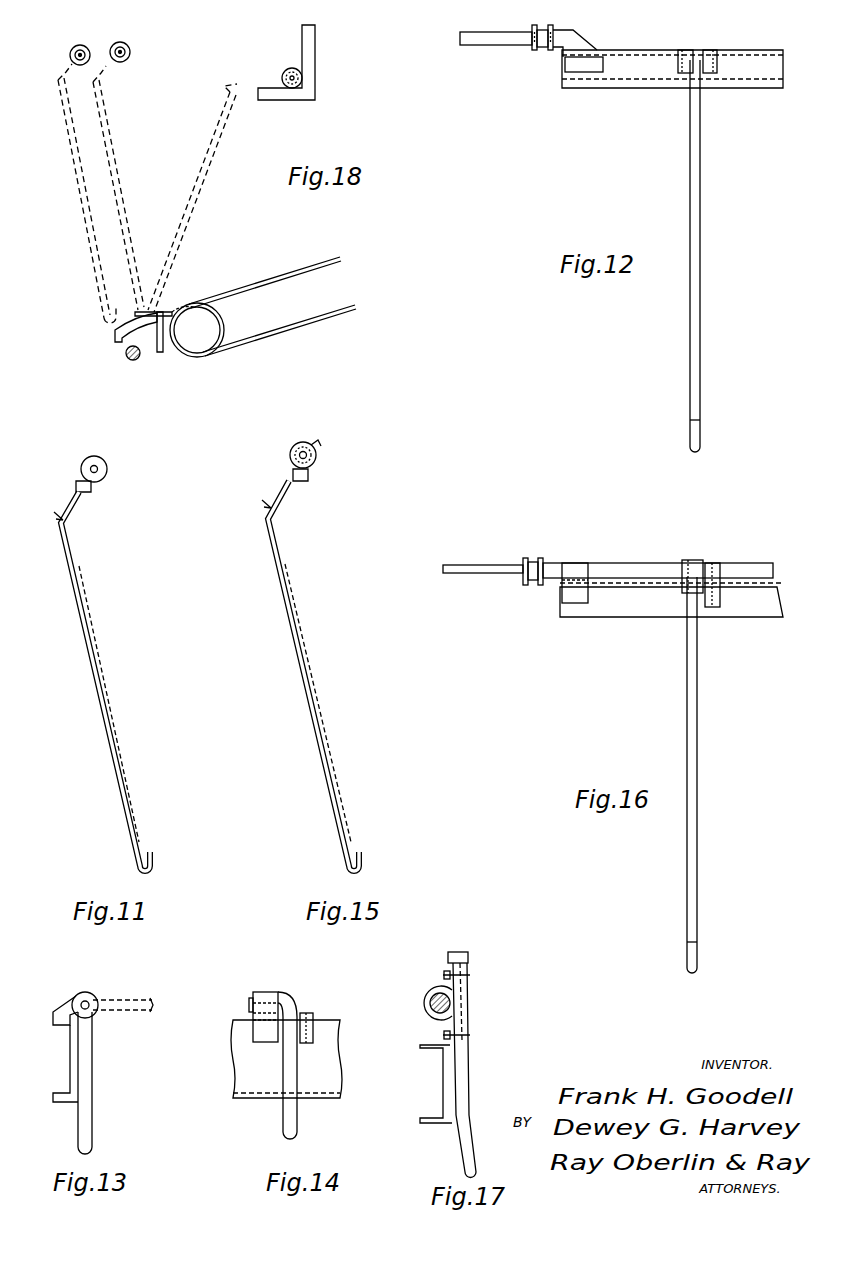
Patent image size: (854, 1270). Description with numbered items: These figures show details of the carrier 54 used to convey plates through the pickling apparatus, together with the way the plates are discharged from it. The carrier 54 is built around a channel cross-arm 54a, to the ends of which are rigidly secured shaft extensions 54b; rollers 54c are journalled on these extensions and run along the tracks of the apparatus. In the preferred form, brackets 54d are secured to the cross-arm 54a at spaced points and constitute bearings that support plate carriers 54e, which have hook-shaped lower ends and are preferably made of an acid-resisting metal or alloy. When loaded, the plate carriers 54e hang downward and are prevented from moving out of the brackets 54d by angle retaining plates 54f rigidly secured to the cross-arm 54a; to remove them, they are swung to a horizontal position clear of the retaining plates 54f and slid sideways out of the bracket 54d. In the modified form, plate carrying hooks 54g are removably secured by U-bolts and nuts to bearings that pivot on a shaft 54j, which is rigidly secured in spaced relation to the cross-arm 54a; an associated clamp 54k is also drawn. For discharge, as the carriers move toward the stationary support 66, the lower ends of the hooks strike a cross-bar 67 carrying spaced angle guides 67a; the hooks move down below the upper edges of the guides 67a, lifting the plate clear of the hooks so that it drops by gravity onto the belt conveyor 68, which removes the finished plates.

In FIG. 11, the carrier 54 is at (102, 496).
In FIG. 15, the carrier 54 is at (310, 486).
In FIG. 12, the channel cross-arm 54a is at (575, 88).
In FIG. 16, the channel cross-arm 54a is at (573, 620).
In FIG. 13, the channel cross-arm 54a is at (70, 1058).
In FIG. 14, the channel cross-arm 54a is at (286, 1059).
In FIG. 17, the channel cross-arm 54a is at (442, 1103).
In FIG. 12, the shaft extension 54b is at (480, 47).
In FIG. 12, the roller 54c is at (541, 50).
In FIG. 12, the bracket 54d is at (682, 48).
In FIG. 13, the bracket 54d is at (68, 1003).
In FIG. 14, the bracket 54d is at (263, 992).
In FIG. 18, the plate carrier 54e is at (113, 157).
In FIG. 12, the plate carrier 54e is at (702, 205).
In FIG. 11, the plate carrier 54e is at (96, 722).
In FIG. 13, the plate carrier 54e is at (90, 1115).
In FIG. 14, the plate carrier 54e is at (297, 1113).
In FIG. 12, the angle retaining plate 54f is at (742, 89).
In FIG. 14, the angle retaining plate 54f is at (313, 1028).
In FIG. 16, the plate carrying hook 54g is at (697, 740).
In FIG. 15, the plate carrying hook 54g is at (299, 679).
In FIG. 17, the plate carrying hook 54g is at (468, 955).
In FIG. 16, the shaft 54j is at (630, 565).
In FIG. 17, the shaft 54j is at (435, 1017).
In FIG. 16, the clamp 54k is at (697, 558).
In FIG. 17, the clamp 54k is at (430, 987).
In FIG. 18, the stationary support 66 is at (315, 80).
In FIG. 18, the cross-bar 67 is at (160, 352).
In FIG. 18, the angle guide 67a is at (113, 331).
In FIG. 18, the belt conveyor 68 is at (297, 268).